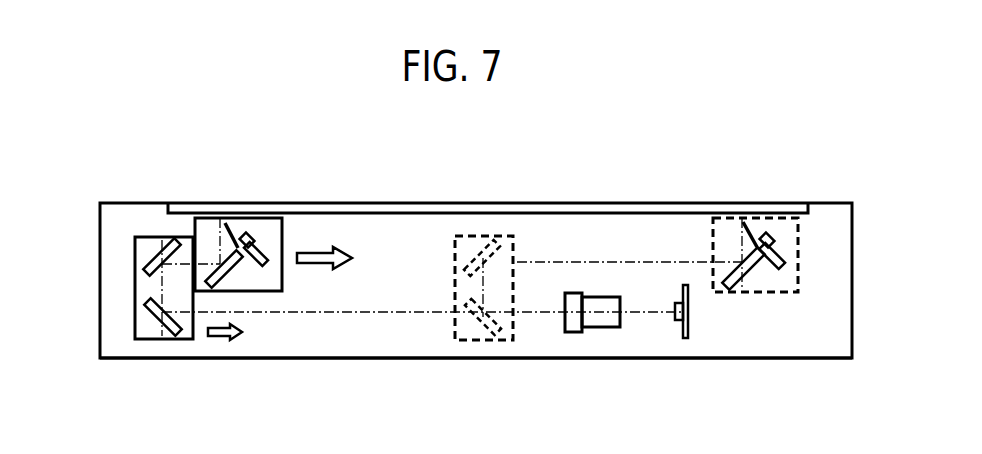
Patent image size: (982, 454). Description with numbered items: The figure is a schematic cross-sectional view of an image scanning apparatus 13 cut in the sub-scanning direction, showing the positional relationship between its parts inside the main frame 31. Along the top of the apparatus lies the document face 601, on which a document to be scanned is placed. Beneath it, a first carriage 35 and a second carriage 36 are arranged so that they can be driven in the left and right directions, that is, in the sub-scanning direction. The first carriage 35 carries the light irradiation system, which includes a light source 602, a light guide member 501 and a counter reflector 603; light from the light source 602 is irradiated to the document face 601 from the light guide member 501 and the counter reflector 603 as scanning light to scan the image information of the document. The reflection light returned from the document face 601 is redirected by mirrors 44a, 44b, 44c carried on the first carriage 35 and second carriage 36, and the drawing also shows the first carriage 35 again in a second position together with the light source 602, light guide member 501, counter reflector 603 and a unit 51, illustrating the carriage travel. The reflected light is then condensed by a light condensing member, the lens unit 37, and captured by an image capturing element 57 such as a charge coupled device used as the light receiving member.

The image scanning apparatus 13 is at (97, 252).
The main frame 31 is at (121, 359).
The first carriage 35 is at (282, 282).
The second carriage 36 is at (148, 236).
The lens unit 37 is at (619, 326).
The mirror 44a is at (238, 281).
The mirror 44b is at (156, 242).
The mirror 44c is at (151, 322).
The light receiving unit 51 is at (780, 261).
The image capturing element 57 is at (689, 330).
The light guide member 501 is at (250, 236).
The document face 601 is at (455, 202).
The light source 602 is at (260, 250).
The counter reflector 603 is at (225, 223).